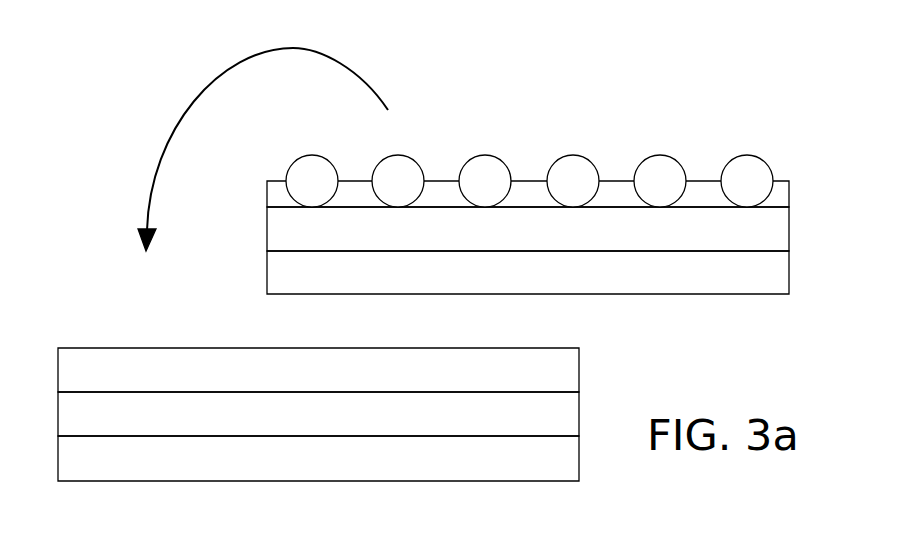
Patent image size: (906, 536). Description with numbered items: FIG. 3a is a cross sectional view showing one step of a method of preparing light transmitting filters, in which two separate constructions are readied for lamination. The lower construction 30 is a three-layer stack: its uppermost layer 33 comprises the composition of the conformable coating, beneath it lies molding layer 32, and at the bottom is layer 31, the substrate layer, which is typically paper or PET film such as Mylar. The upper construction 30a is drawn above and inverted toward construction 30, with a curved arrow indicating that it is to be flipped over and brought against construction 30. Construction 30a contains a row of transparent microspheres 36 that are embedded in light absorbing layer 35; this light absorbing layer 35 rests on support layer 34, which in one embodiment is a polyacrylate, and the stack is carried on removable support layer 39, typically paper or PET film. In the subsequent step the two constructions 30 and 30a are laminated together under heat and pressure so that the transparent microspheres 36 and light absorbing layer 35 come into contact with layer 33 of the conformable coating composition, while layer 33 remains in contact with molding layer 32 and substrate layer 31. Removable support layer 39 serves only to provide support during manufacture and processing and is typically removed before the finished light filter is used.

The construction 30a is at (553, 168).
The construction 30 is at (361, 392).
The substrate layer 31 is at (569, 462).
The molding layer 32 is at (580, 417).
The layer comprising the composition of the conformable coating 33 is at (570, 365).
The support layer 34 is at (780, 225).
The light absorbing layer 35 is at (790, 189).
The transparent microspheres 36 is at (737, 165).
The removable support layer 39 is at (736, 276).